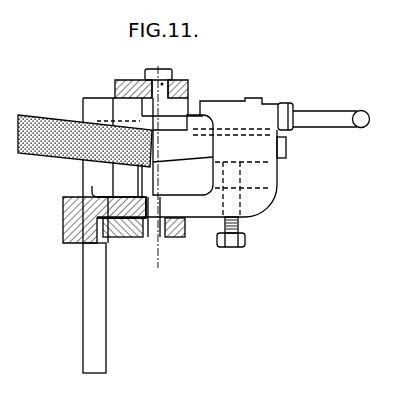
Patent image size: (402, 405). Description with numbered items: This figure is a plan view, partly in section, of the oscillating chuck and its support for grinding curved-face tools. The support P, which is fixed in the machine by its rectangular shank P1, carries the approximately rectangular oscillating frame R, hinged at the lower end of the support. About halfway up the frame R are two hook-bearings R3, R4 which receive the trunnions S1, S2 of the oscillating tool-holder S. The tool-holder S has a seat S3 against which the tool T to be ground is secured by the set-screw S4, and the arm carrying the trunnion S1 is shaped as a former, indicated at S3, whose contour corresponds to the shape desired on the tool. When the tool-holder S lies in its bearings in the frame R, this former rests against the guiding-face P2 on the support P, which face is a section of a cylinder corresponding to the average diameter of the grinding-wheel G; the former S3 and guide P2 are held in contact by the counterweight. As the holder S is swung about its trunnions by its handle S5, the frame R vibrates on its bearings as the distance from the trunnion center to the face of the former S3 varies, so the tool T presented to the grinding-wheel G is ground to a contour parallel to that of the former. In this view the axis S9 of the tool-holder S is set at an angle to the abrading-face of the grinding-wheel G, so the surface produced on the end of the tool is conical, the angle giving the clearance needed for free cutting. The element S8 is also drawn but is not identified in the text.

The grinding-wheel G is at (85, 141).
The tool T is at (175, 147).
The support P is at (63, 216).
The rectangular shank P1 is at (111, 235).
The guiding-face P2 is at (142, 185).
The oscillating frame R is at (123, 232).
The hook-bearing R3 is at (177, 242).
The hook-bearing R4 is at (207, 125).
The oscillating tool-holder S is at (191, 157).
The trunnion S1 is at (156, 240).
The trunnion S2 is at (164, 83).
The seat / former S3 is at (148, 206).
The set-screw S4 is at (245, 240).
The handle S5 is at (324, 106).
The pivot pin S8 is at (262, 127).
The axis S9 is at (161, 166).